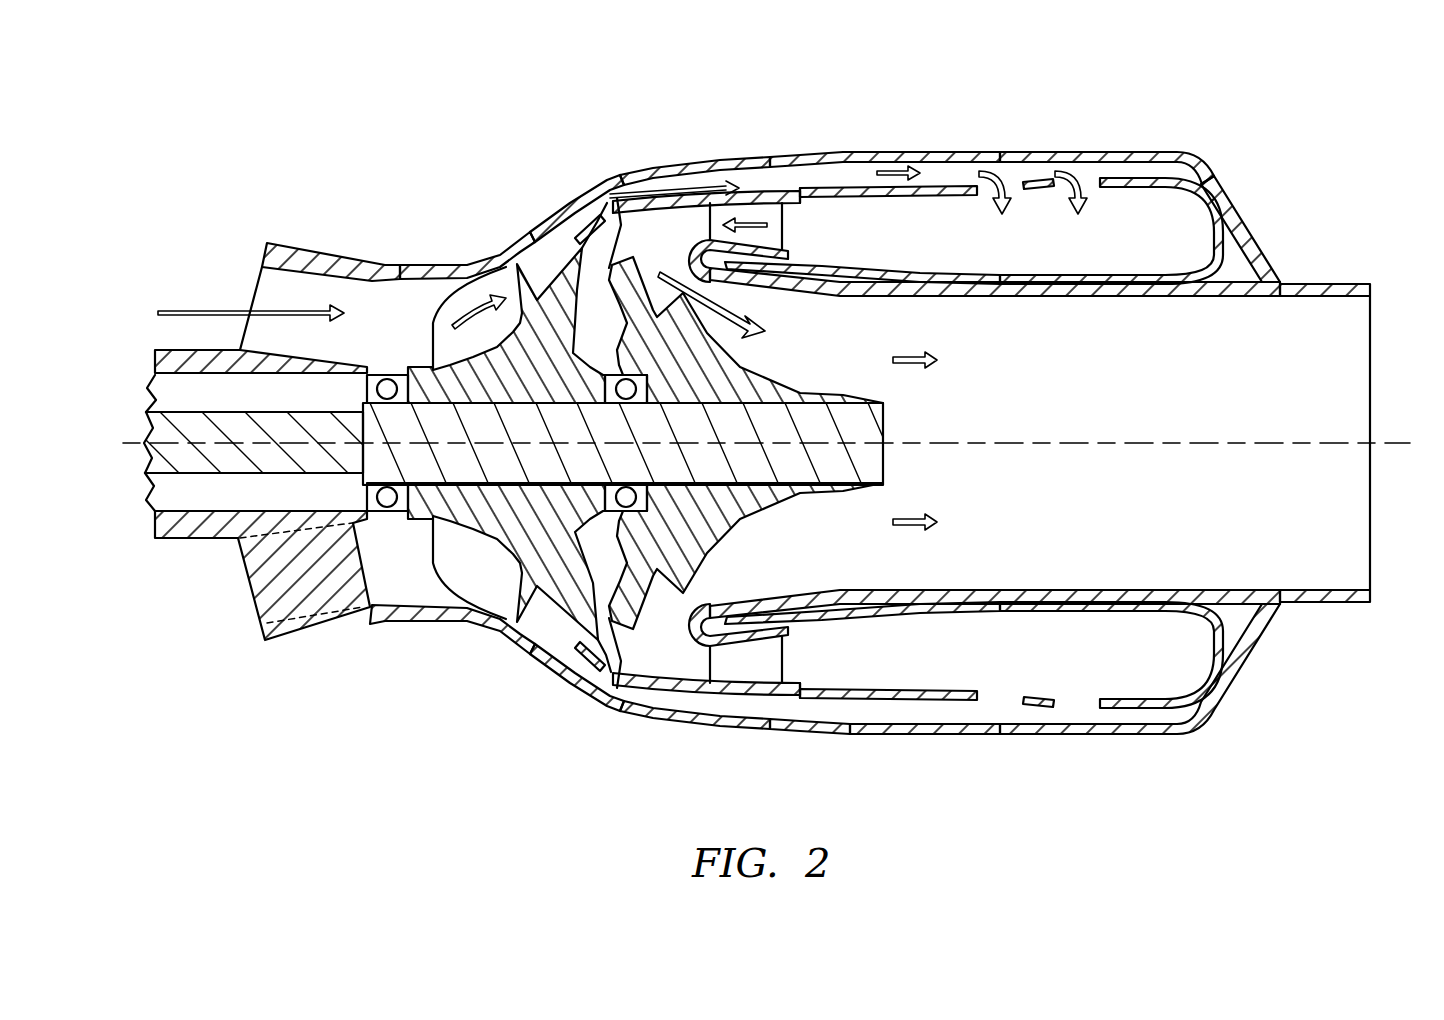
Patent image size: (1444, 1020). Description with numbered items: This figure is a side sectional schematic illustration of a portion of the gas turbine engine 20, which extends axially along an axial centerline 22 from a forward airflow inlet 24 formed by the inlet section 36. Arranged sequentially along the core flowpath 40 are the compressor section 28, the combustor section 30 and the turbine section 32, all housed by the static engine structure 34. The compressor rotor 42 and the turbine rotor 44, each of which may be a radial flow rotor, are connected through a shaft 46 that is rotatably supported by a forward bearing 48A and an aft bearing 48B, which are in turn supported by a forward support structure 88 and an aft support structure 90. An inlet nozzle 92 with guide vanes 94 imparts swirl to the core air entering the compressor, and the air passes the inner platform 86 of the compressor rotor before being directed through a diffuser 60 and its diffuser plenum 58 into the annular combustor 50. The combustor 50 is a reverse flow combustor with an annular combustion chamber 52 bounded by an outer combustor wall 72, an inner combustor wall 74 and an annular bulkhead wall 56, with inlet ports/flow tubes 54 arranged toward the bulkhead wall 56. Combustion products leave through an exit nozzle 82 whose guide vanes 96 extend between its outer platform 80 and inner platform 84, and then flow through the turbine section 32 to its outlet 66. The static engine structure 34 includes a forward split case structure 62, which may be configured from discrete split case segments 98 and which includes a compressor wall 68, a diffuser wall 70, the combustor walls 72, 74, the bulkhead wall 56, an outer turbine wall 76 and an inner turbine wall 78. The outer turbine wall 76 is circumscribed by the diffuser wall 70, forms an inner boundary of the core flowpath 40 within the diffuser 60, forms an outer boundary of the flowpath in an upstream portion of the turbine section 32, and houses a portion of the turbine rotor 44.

The gas turbine engine 20 is at (268, 126).
The axial centerline 22 is at (1405, 455).
The airflow inlet 24 is at (222, 335).
The compressor section 28 is at (463, 258).
The combustor section 30 is at (912, 138).
The turbine section 32 is at (610, 690).
The static engine structure 34 is at (598, 178).
The inlet section 36 is at (318, 238).
The core flowpath 40 is at (386, 336).
The compressor rotor 42 is at (458, 560).
The turbine rotor 44 is at (707, 537).
The shaft 46 is at (885, 462).
The forward bearing 48A is at (387, 507).
The aft bearing 48B is at (630, 497).
The combustor 50 is at (1118, 173).
The combustion chamber 52 is at (1136, 239).
The inlet ports/flow tubes 54 is at (1075, 707).
The bulkhead wall 56 is at (1215, 225).
The diffuser plenum 58 is at (845, 178).
The diffuser 60 is at (795, 153).
The split case structure 62 is at (640, 733).
The outlet 66 is at (1372, 288).
The compressor wall 68 is at (505, 250).
The diffuser wall 70 is at (740, 163).
The outer combustor wall 72 is at (958, 185).
The inner combustor wall 74 is at (1000, 292).
The outer turbine wall 76 is at (667, 190).
The inner turbine wall 78 is at (687, 203).
The outer platform 80 is at (763, 707).
The exit nozzle 82 is at (812, 668).
The inner platform 84 is at (797, 597).
The inner platform 86 is at (560, 215).
The forward support structure 88 is at (150, 520).
The aft support structure 90 is at (545, 646).
The inlet nozzle 92 is at (255, 265).
The guide vanes 94 is at (255, 300).
The guide vanes 96 is at (798, 238).
The split case segments 98 is at (1208, 140).